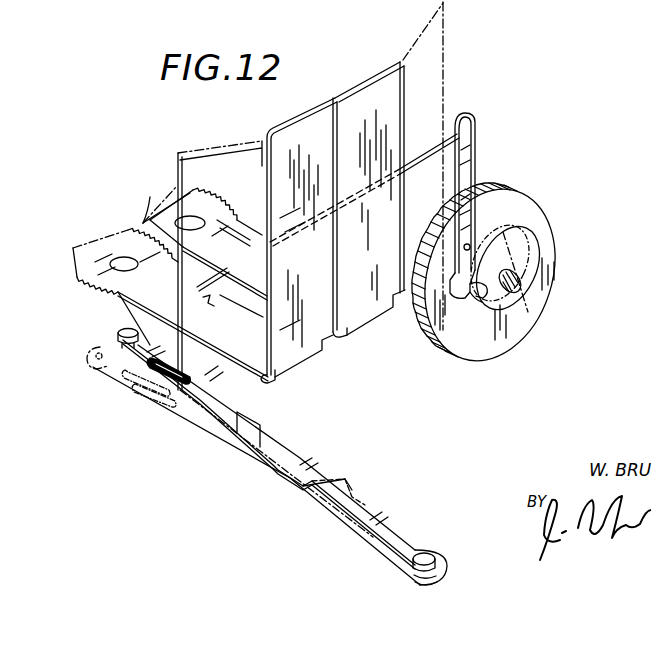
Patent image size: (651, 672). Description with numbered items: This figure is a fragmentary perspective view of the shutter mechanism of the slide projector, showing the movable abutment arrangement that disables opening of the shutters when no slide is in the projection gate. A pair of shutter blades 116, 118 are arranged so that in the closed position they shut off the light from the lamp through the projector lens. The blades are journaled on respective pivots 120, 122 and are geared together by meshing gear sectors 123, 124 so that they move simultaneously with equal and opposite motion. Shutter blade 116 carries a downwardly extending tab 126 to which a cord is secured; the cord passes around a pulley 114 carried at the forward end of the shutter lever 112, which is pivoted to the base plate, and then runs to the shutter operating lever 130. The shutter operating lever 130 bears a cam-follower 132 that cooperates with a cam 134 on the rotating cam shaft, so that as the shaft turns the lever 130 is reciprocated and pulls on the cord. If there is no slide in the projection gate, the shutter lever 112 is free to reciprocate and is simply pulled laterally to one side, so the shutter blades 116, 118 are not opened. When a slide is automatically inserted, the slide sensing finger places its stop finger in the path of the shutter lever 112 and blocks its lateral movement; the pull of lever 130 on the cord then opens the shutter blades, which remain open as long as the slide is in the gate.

The shutter lever 112 is at (305, 468).
The pulley 114 is at (93, 358).
The shutter blade 116 is at (296, 128).
The shutter blade 118 is at (367, 74).
The pivot 120 is at (80, 285).
The pivot 122 is at (199, 218).
The gear sector 123 is at (142, 231).
The gear sector 124 is at (159, 199).
The tab 126 is at (207, 300).
The shutter operating lever 130 is at (475, 176).
The cam-follower 132 is at (462, 298).
The cam 134 is at (530, 250).